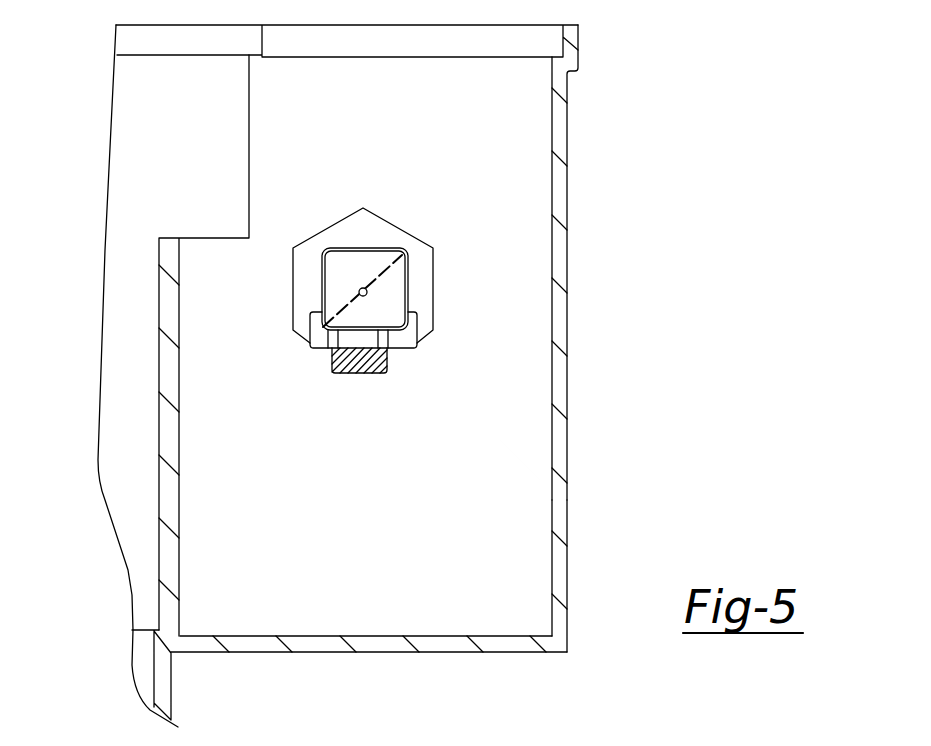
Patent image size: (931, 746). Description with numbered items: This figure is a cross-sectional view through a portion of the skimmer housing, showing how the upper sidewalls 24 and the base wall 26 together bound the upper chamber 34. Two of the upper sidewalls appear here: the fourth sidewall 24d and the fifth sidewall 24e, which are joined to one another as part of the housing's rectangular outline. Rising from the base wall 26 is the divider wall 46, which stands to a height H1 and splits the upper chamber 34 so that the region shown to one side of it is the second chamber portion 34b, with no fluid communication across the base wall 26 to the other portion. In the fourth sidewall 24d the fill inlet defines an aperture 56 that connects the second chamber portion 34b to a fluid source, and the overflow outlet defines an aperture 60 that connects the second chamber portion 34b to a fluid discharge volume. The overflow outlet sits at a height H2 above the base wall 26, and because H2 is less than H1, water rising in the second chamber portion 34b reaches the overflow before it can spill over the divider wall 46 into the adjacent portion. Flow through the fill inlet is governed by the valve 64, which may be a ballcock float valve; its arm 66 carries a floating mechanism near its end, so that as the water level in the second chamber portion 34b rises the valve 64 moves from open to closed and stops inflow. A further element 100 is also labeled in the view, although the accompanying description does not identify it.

The upper sidewalls 24 is at (400, 376).
The fifth sidewall 24e is at (567, 250).
The fourth sidewall 24d is at (532, 522).
The base wall 26 is at (530, 653).
The upper chamber 34 is at (588, 443).
The second chamber portion 34b is at (528, 462).
The divider wall 46 is at (172, 432).
The aperture 56 is at (408, 288).
The aperture 60 is at (363, 208).
The valve 64 is at (334, 306).
The arm 66 is at (367, 374).
The battery assembly 100 is at (643, 745).
The height H1 is at (208, 248).
The height H2 is at (462, 626).